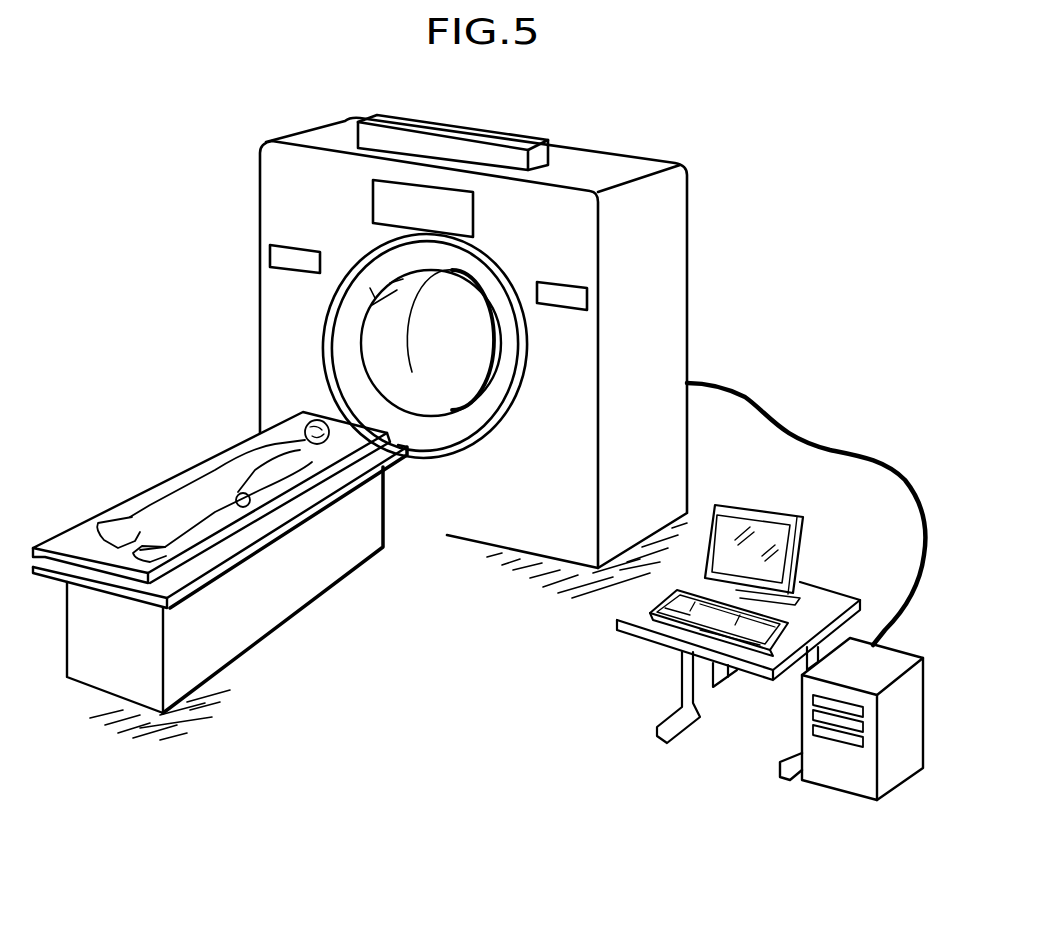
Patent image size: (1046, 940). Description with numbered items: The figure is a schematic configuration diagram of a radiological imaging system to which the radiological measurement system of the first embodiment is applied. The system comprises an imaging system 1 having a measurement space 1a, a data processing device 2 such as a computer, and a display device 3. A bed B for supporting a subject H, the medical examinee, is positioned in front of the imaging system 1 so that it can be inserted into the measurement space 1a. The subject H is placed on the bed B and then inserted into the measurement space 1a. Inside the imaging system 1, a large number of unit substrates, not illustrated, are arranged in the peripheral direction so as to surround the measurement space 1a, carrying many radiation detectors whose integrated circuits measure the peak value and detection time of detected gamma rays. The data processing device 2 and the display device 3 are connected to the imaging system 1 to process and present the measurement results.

The imaging system 1 is at (483, 356).
The measurement space 1a is at (393, 336).
The data processing device 2 is at (862, 787).
The display device 3 is at (738, 525).
The subject H is at (217, 480).
The bed B is at (257, 513).